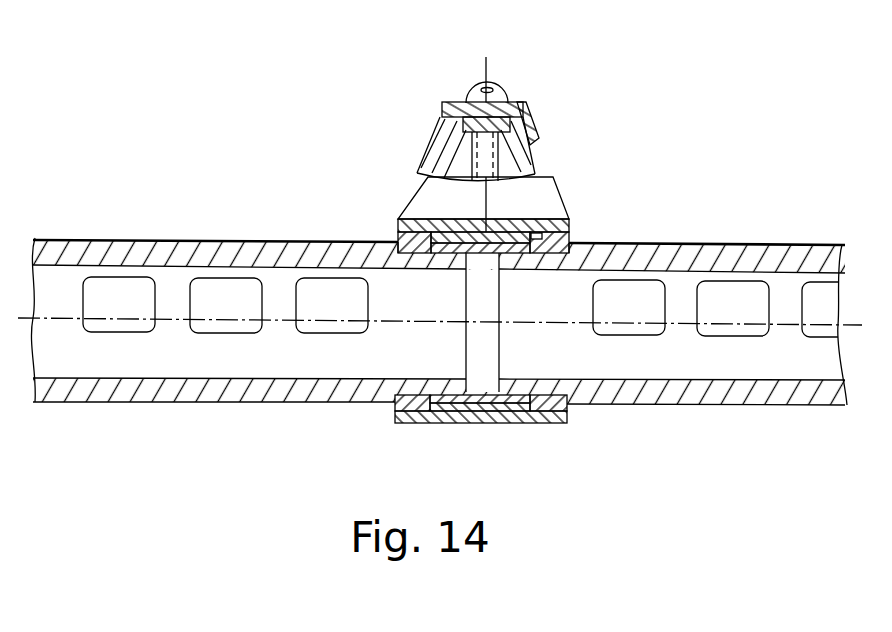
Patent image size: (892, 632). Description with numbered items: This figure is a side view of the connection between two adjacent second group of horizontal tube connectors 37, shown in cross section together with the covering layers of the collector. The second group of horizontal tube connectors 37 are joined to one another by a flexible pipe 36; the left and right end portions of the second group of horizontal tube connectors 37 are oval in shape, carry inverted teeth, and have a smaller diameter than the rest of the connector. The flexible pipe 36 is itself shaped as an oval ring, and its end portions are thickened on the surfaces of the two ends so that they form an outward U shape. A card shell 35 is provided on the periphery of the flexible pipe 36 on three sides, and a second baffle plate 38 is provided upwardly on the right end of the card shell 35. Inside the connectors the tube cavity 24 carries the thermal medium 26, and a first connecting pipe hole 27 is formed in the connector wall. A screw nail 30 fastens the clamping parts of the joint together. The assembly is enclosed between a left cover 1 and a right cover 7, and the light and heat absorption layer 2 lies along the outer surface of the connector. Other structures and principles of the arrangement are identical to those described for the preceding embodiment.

The left cover 1 is at (491, 196).
The light and heat absorption layer 2 is at (439, 122).
The right cover 7 is at (567, 72).
The tube cavity 24 is at (440, 202).
The thermal medium 26 is at (439, 202).
The first connecting pipe hole 27 is at (460, 168).
The screw nail 30 is at (494, 51).
The card shell 35 is at (534, 211).
The flexible pipe 36 is at (565, 205).
The second group of horizontal tube connectors 37 is at (443, 136).
The second baffle plate 38 is at (483, 116).